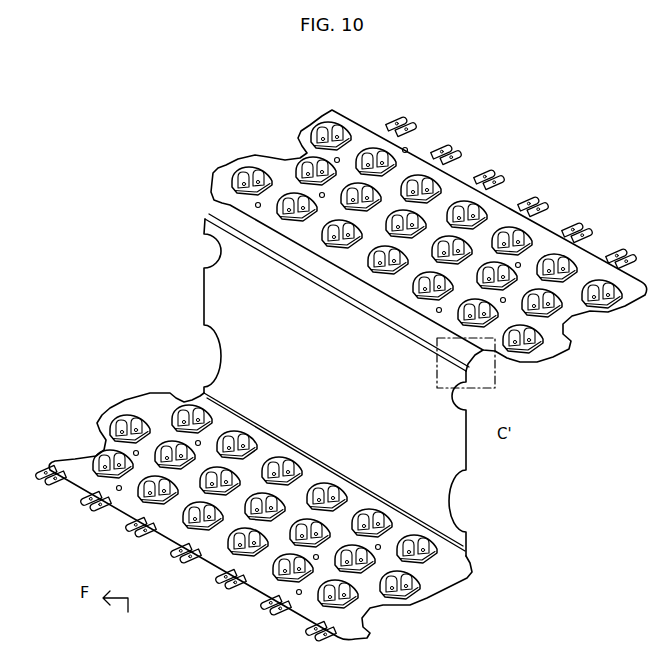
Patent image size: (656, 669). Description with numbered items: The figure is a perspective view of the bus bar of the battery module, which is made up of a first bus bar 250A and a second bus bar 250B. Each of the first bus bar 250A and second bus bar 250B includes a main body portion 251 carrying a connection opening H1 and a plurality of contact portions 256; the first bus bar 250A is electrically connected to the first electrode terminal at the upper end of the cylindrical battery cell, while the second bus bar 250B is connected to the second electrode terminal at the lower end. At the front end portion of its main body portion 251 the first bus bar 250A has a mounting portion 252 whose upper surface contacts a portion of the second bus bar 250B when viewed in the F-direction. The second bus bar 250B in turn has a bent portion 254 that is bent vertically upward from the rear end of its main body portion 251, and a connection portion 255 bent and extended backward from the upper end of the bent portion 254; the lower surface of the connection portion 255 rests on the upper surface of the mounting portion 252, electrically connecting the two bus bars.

The first bus bar 250A is at (289, 115).
The second bus bar 250B is at (111, 400).
The main body portion 251 is at (363, 130).
The mounting portion 252 is at (495, 358).
The bent portion 254 is at (230, 297).
The connection portion 255 is at (230, 217).
The contact portion 256 is at (422, 176).
The connection opening H1 is at (183, 518).